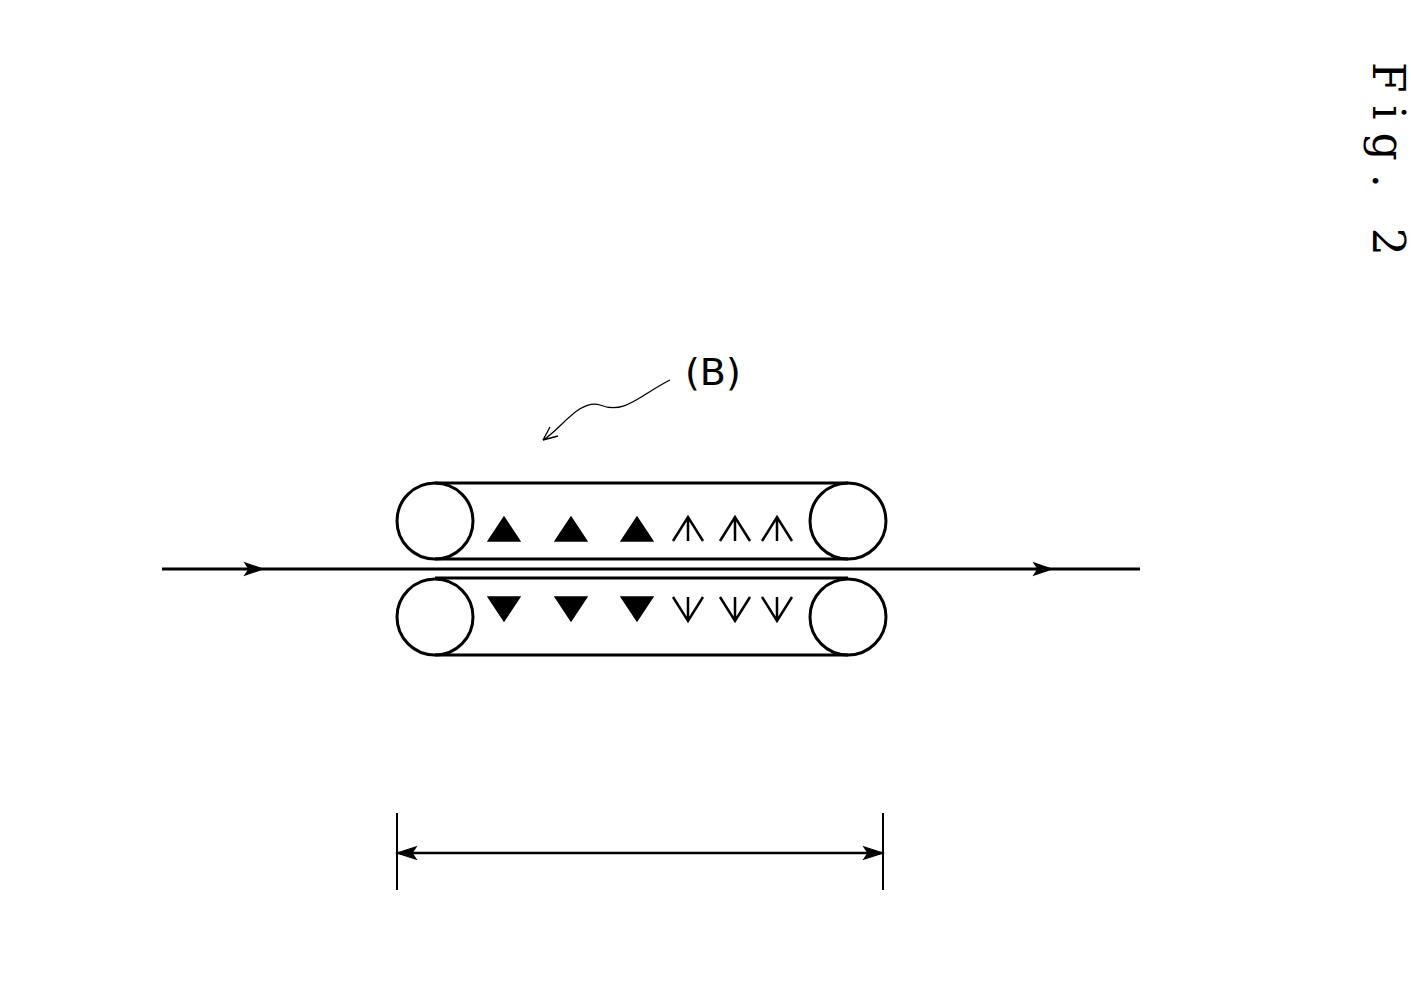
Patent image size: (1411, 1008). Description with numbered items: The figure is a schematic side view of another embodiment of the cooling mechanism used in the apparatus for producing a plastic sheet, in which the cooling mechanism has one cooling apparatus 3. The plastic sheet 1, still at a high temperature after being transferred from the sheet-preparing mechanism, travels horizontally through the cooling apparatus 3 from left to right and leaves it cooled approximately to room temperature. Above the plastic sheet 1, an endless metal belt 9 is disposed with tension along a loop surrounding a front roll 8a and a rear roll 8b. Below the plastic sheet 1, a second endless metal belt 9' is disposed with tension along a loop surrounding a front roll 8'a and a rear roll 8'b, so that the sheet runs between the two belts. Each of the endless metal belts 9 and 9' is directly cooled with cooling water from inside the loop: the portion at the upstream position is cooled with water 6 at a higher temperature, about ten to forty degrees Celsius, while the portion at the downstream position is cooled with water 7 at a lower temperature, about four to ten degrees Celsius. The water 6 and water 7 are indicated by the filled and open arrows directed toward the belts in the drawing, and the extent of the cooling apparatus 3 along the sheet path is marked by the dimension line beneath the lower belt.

The plastic sheet 1 is at (322, 569).
The cooling apparatus 3 is at (640, 818).
The water at a higher temperature 6 is at (506, 519).
The water at a lower temperature 7 is at (778, 518).
The front roll 8a is at (435, 513).
The rear roll 8b is at (847, 520).
The front roll 8'a is at (397, 665).
The rear roll 8'b is at (901, 646).
The endless metal belt 9 is at (641, 482).
The endless metal belt 9' is at (641, 655).